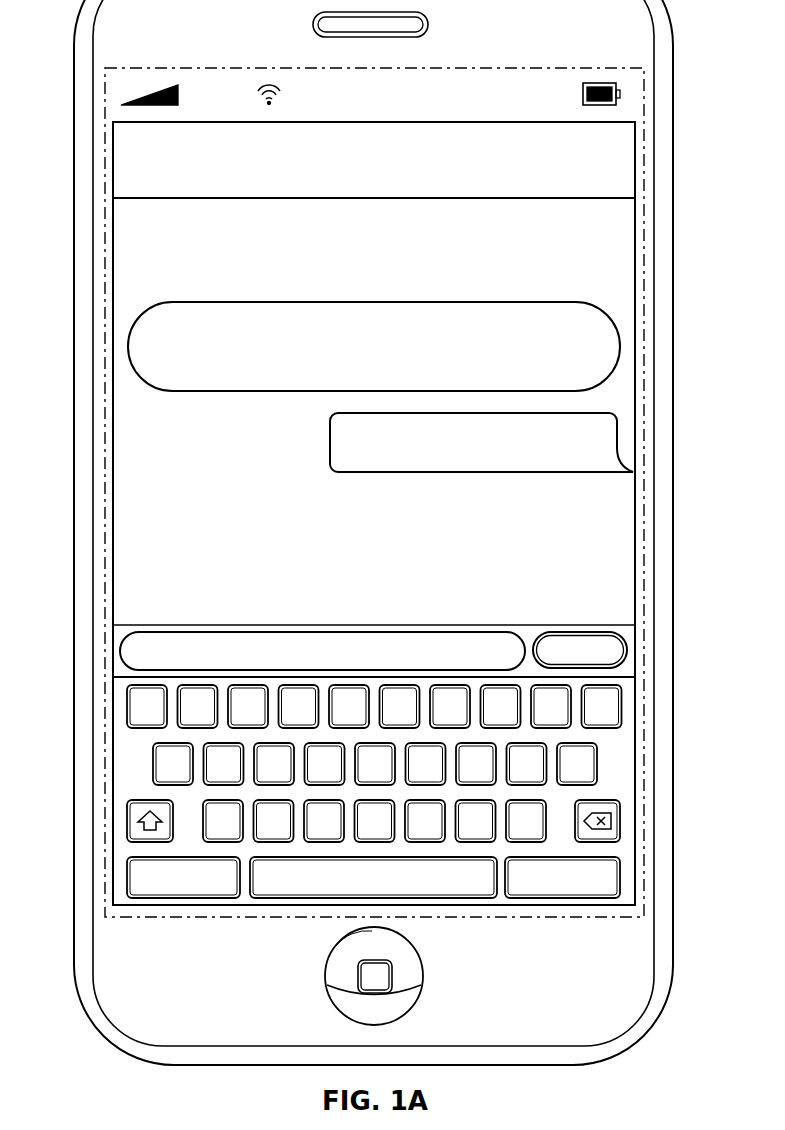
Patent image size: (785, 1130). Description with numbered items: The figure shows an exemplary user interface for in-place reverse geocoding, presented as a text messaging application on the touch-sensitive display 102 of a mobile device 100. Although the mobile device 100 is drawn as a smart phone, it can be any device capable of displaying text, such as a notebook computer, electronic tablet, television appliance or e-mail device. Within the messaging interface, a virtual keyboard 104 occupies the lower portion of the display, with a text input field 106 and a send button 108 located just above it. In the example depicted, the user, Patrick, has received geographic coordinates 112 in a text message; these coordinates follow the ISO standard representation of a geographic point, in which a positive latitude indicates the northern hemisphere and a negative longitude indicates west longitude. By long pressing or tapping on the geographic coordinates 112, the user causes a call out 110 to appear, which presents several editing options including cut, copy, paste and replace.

The mobile device 100 is at (673, 137).
The touch-sensitive display 102 is at (493, 68).
The virtual keyboard 104 is at (622, 758).
The text input field 106 is at (120, 652).
The send button 108 is at (627, 650).
The call out 110 is at (620, 345).
The geographic coordinates 112 is at (617, 440).